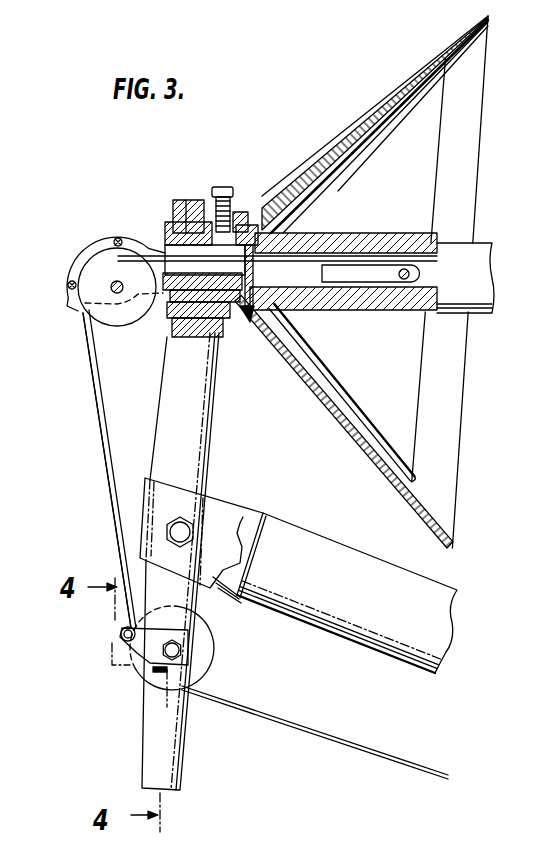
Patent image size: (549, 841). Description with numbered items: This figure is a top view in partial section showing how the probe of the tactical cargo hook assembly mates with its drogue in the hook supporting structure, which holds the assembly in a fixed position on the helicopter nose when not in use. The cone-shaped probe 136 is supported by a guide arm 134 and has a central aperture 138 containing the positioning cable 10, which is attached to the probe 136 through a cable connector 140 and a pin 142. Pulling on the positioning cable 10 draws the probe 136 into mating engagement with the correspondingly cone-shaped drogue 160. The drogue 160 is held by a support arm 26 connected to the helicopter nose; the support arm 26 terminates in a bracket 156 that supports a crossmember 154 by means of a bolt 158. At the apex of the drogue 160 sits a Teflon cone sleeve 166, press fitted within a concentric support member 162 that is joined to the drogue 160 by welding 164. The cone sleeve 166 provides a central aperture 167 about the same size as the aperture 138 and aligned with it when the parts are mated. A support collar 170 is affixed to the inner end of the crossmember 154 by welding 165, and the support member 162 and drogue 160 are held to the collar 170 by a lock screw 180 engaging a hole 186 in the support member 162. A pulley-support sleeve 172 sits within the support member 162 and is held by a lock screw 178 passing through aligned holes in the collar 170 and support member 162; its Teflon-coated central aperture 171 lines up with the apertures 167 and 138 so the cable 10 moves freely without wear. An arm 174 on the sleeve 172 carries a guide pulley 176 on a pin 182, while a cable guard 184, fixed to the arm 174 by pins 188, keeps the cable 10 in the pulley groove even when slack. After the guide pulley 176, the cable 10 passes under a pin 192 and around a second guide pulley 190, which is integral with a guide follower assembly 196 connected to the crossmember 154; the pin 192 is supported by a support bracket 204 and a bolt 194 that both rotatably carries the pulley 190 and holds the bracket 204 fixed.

The positioning cable 10 is at (100, 410).
The support arm 26 is at (450, 593).
The guide arm 134 is at (480, 253).
The cone-shaped probe 136 is at (418, 103).
The central aperture 138 is at (382, 262).
The cable connector 140 is at (372, 280).
The pin 142 is at (406, 281).
The crossmember 154 is at (210, 415).
The bracket 156 is at (228, 482).
The bolt 158 is at (186, 528).
The cone-shaped drogue 160 is at (373, 107).
The support member 162 is at (248, 222).
The welding 164 is at (249, 323).
The welding 165 is at (228, 338).
The cone sleeve 166 is at (295, 227).
The central aperture 167 is at (280, 308).
The support collar 170 is at (176, 200).
The central aperture 171 is at (163, 243).
The pulley-support sleeve 172 is at (167, 228).
The arm 174 is at (157, 322).
The guide pulley 176 is at (110, 317).
The lock screw 178 is at (193, 200).
The lock screw 180 is at (238, 210).
The pin 182 is at (112, 286).
The cable guard 184 is at (83, 253).
The hole 186 is at (221, 186).
The pins 188 is at (114, 240).
The second guide pulley 190 is at (214, 662).
The pin 192 is at (121, 636).
The bolt 194 is at (182, 648).
The guide follower assembly 196 is at (190, 732).
The support bracket 204 is at (147, 651).